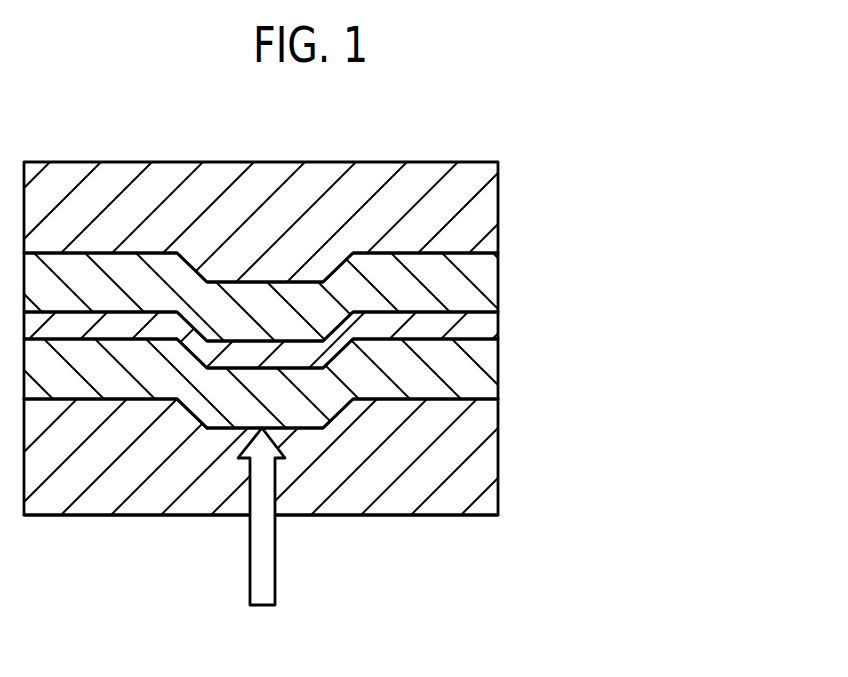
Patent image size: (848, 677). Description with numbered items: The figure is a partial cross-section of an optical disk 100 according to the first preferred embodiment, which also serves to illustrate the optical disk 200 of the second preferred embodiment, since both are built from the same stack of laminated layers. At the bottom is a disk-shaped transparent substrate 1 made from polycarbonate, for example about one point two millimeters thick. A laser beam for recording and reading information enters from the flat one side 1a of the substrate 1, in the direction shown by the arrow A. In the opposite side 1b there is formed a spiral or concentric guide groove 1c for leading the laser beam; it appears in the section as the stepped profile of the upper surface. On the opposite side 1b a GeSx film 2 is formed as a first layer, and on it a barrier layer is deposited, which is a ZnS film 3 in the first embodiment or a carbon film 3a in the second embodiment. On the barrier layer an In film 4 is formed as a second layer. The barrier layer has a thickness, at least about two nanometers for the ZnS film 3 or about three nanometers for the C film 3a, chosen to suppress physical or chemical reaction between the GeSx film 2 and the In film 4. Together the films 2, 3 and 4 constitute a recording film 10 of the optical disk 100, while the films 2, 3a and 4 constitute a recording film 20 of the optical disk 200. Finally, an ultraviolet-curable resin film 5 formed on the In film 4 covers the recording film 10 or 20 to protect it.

The optical disk 100 is at (424, 378).
The optical disk 200 is at (424, 378).
The transparent substrate 1 is at (424, 370).
The one side of the substrate 1a is at (433, 515).
The opposite side of the substrate 1b is at (438, 403).
The guide groove 1c is at (182, 417).
The GeSx film 2 is at (482, 368).
The ZnS film 3 is at (366, 370).
The C film 3a is at (484, 330).
The In film 4 is at (483, 282).
The ultraviolet-curable resin film 5 is at (473, 172).
The recording film 10 is at (424, 370).
The recording film 20 is at (424, 370).